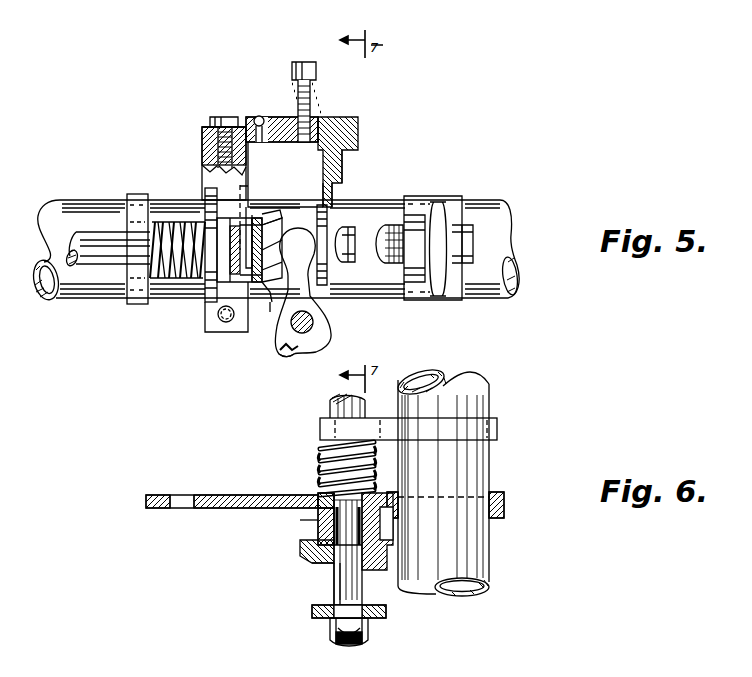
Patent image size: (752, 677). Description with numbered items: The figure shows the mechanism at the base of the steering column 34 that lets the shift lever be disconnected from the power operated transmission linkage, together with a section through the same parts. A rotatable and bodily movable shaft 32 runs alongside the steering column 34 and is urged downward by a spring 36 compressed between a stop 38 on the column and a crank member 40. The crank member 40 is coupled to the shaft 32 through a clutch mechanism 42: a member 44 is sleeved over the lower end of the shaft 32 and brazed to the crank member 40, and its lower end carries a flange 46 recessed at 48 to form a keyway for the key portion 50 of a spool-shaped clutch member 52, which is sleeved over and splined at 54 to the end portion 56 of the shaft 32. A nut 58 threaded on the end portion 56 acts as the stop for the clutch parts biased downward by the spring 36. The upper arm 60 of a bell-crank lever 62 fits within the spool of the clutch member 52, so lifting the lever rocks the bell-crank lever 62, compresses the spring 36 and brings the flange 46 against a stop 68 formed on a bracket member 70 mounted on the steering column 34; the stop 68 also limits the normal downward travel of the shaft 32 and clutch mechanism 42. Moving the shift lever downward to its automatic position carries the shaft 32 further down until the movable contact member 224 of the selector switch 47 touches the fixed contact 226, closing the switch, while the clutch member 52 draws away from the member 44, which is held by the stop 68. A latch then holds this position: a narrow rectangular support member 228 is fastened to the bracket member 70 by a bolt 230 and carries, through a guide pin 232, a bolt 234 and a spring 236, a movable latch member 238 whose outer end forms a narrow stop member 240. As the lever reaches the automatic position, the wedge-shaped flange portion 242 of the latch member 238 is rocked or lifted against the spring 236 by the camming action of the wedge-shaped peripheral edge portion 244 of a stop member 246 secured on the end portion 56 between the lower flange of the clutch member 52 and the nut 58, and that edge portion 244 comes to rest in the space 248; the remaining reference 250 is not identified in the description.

In FIG. 5, the shaft 32 is at (85, 236).
In FIG. 6, the shaft 32 is at (330, 406).
In FIG. 5, the steering column 34 is at (499, 200).
In FIG. 6, the steering column 34 is at (489, 576).
In FIG. 5, the spring 36 is at (176, 282).
In FIG. 6, the spring 36 is at (322, 460).
In FIG. 5, the stop 38 is at (130, 200).
In FIG. 6, the stop 38 is at (466, 422).
In FIG. 5, the crank member 40 is at (206, 196).
In FIG. 6, the crank member 40 is at (216, 495).
In FIG. 5, the clutch mechanism 42 is at (270, 296).
In FIG. 6, the clutch mechanism 42 is at (304, 562).
In FIG. 5, the member 44 is at (210, 314).
In FIG. 6, the member 44 is at (316, 522).
In FIG. 5, the flange 46 is at (255, 222).
In FIG. 6, the flange 46 is at (300, 546).
In FIG. 5, the selector switch 47 is at (386, 236).
In FIG. 5, the recess 48 is at (280, 214).
In FIG. 5, the key portion 50 is at (284, 252).
In FIG. 5, the clutch member 52 is at (276, 318).
In FIG. 6, the clutch member 52 is at (330, 566).
In FIG. 6, the splines 54 is at (322, 497).
In FIG. 6, the end portion of the shaft 56 is at (366, 618).
In FIG. 6, the nut 58 is at (348, 638).
In FIG. 5, the upper arm 60 is at (320, 308).
In FIG. 5, the bell-crank lever 62 is at (326, 334).
In FIG. 5, the stop 68 is at (246, 186).
In FIG. 6, the stop 68 is at (380, 566).
In FIG. 5, the bracket member 70 is at (205, 152).
In FIG. 6, the bracket member 70 is at (504, 502).
In FIG. 5, the movable contact member 224 is at (352, 240).
In FIG. 5, the fixed contact 226 is at (422, 198).
In FIG. 5, the support member 228 is at (204, 136).
In FIG. 5, the bolt 230 is at (212, 122).
In FIG. 5, the guide pin 232 is at (258, 118).
In FIG. 5, the bolt 234 is at (290, 92).
In FIG. 5, the spring 236 is at (292, 70).
In FIG. 5, the movable latch member 238 is at (322, 130).
In FIG. 5, the stop member 240 is at (358, 124).
In FIG. 5, the wedge-shaped flange portion 242 is at (320, 128).
In FIG. 5, the wedge-shaped peripheral edge portion 244 is at (323, 160).
In FIG. 6, the stop member 246 is at (326, 618).
In FIG. 5, the space 248 is at (356, 148).
In FIG. 5, the bracket web 250 is at (343, 174).